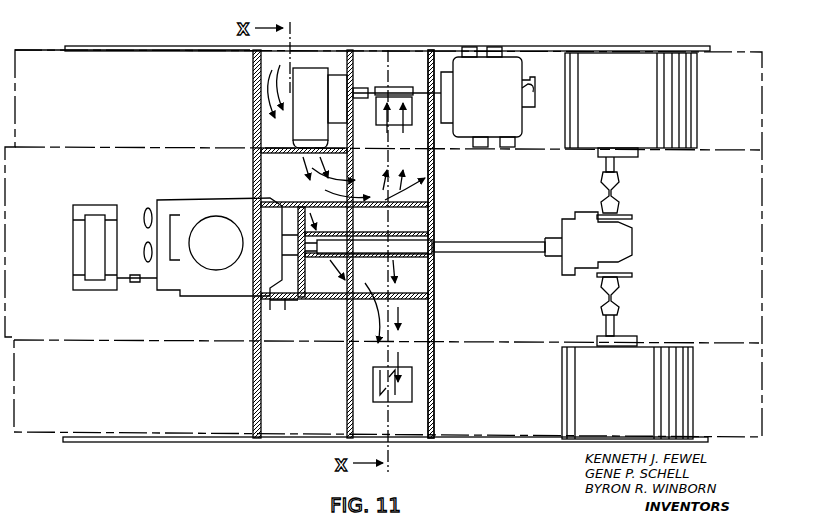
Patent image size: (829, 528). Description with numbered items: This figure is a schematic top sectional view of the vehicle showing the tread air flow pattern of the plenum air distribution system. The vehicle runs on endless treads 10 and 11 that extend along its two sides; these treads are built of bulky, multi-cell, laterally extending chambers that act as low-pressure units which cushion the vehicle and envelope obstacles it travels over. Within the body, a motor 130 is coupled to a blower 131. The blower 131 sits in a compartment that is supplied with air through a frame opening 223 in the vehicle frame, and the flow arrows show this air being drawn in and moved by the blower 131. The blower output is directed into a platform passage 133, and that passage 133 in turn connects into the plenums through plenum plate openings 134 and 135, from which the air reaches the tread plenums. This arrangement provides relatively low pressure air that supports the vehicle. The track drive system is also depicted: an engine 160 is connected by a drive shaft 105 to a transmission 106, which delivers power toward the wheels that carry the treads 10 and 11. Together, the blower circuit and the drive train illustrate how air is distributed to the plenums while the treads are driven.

The endless tread 10 is at (32, 436).
The endless tread 11 is at (27, 48).
The drive shaft 105 is at (475, 240).
The transmission 106 is at (560, 231).
The motor 130 is at (504, 105).
The blower 131 is at (322, 114).
The platform passage 133 is at (434, 170).
The plenum plate opening 134 is at (398, 402).
The plenum plate opening 135 is at (390, 87).
The engine 160 is at (203, 198).
The frame opening 223 is at (312, 58).